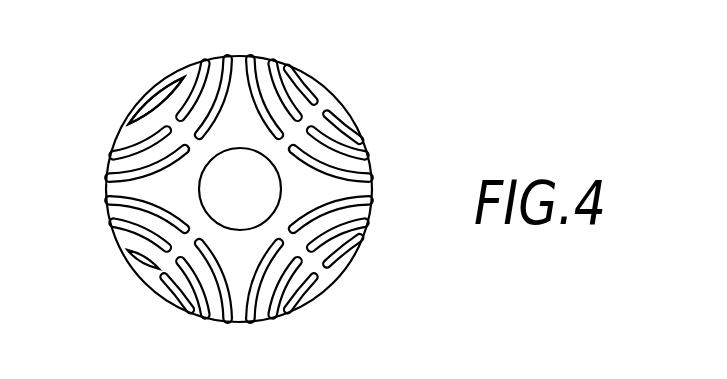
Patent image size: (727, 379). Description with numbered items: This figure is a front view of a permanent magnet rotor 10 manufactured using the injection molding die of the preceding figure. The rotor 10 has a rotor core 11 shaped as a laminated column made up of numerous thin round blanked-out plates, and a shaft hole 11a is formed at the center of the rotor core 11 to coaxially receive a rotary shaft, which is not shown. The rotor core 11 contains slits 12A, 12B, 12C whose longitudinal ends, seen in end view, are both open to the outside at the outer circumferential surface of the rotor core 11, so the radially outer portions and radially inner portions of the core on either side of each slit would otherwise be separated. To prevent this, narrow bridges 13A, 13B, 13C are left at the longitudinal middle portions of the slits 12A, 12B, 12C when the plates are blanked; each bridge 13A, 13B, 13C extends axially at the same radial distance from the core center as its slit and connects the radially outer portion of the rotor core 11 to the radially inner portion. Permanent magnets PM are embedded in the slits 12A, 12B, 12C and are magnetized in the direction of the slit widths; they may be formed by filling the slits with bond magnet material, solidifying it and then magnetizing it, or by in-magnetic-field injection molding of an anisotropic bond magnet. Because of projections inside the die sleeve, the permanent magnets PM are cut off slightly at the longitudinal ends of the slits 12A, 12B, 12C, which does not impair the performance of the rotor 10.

The permanent magnet rotor 10 is at (362, 73).
The rotor core 11 is at (318, 190).
The shaft hole 11a is at (266, 198).
The slit 12A is at (183, 76).
The slit 12B is at (216, 66).
The slit 12C is at (239, 64).
The bridge 13A is at (150, 107).
The bridge 13B is at (133, 122).
The bridge 13C is at (138, 170).
The permanent magnet PM is at (308, 80).